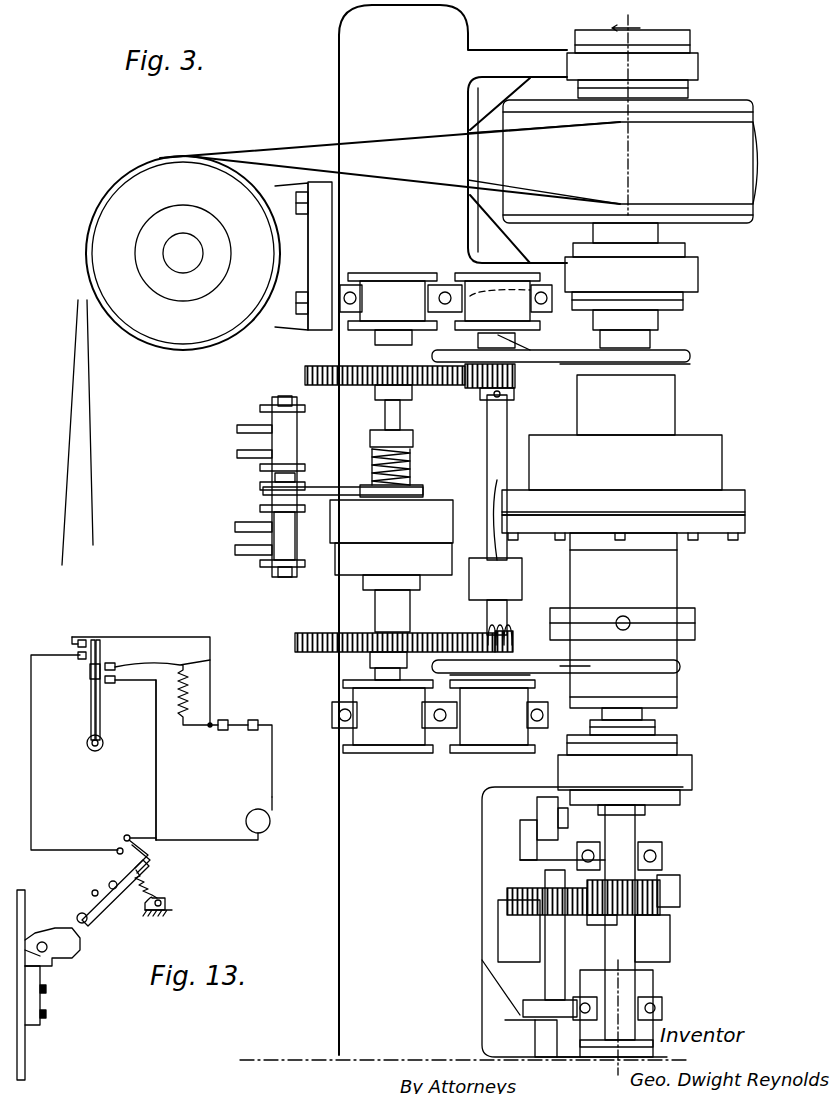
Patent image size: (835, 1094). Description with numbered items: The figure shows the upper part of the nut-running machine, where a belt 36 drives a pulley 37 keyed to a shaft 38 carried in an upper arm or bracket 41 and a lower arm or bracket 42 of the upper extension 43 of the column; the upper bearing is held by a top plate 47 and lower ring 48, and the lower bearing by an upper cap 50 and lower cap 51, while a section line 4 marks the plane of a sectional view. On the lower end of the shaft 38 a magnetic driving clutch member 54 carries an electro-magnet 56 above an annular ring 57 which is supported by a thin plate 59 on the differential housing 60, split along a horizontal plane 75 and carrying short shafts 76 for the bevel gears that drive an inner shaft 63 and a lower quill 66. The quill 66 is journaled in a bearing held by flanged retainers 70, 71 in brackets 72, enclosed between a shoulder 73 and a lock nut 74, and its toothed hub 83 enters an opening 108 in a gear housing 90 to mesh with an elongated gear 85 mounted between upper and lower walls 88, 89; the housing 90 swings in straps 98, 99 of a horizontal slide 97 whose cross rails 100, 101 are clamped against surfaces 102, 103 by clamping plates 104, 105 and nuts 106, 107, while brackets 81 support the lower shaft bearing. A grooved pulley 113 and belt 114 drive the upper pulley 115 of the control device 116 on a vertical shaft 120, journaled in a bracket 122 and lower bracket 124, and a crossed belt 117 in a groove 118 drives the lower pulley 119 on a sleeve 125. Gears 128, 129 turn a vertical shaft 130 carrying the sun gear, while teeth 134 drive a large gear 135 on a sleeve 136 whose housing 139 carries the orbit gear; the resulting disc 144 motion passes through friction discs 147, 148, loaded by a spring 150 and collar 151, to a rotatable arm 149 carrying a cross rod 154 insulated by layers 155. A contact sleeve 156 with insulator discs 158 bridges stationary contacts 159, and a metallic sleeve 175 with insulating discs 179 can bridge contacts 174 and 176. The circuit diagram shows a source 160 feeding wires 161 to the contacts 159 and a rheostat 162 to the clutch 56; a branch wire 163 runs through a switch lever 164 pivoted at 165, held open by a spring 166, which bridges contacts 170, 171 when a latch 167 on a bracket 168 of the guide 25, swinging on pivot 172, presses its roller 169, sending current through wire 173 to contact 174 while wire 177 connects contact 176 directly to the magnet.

In FIG. 3, the upper extension of the upright 43 is at (336, 1052).
In FIG. 3, the section line 4 is at (623, 548).
In FIG. 3, the top plate 47 is at (672, 42).
In FIG. 3, the upper arm or bracket 41 is at (690, 60).
In FIG. 3, the lower ring 48 is at (684, 92).
In FIG. 3, the pulley 37 is at (745, 112).
In FIG. 3, the belt 36 is at (285, 146).
In FIG. 3, the upper cap 50 is at (685, 250).
In FIG. 3, the lower arm or bracket 42 is at (698, 275).
In FIG. 3, the lower cap 51 is at (686, 310).
In FIG. 3, the shaft 38 is at (652, 335).
In FIG. 3, the bracket 122 is at (470, 283).
In FIG. 3, the upper grooved pulley 115 is at (550, 350).
In FIG. 3, the belt 114 is at (690, 357).
In FIG. 3, the grooved pulley 113 is at (686, 365).
In FIG. 3, the gear 129 is at (316, 366).
In FIG. 3, the gear 128 is at (515, 378).
In FIG. 3, the vertical shaft 130 is at (400, 410).
In FIG. 3, the vertical shaft 120 is at (507, 418).
In FIG. 3, the metallic sleeve 175 is at (286, 438).
In FIG. 3, the insulating discs 179 is at (266, 405).
In FIG. 3, the fixed contact 176 is at (237, 429).
In FIG. 13, the fixed contact 176 is at (85, 640).
In FIG. 3, the contact 174 is at (237, 455).
In FIG. 13, the contact 174 is at (80, 660).
In FIG. 3, the layers of insulation 155 is at (262, 484).
In FIG. 3, the cross rod 154 is at (296, 479).
In FIG. 3, the end insulator discs 158 is at (260, 507).
In FIG. 3, the stationary contacts 159 is at (235, 548).
In FIG. 13, the stationary contacts 159 is at (116, 667).
In FIG. 3, the contact sleeve 156 is at (290, 546).
In FIG. 3, the nut or collar 151 is at (413, 440).
In FIG. 3, the spring 150 is at (372, 470).
In FIG. 3, the outer friction disc 148 is at (412, 478).
In FIG. 3, the friction disc 147 is at (425, 490).
In FIG. 3, the rotatable arm 149 is at (312, 495).
In FIG. 13, the rotatable arm 149 is at (98, 712).
In FIG. 3, the disc 144 is at (440, 500).
In FIG. 3, the housing 139 is at (393, 566).
In FIG. 3, the control device 116 is at (331, 572).
In FIG. 3, the sleeve 136 is at (386, 608).
In FIG. 3, the large gear 135 is at (304, 633).
In FIG. 3, the gear teeth 134 is at (515, 638).
In FIG. 3, the sleeve 125 is at (507, 612).
In FIG. 3, the magnetic driving clutch member 54 is at (625, 432).
In FIG. 3, the annular plate or ring 57 is at (740, 525).
In FIG. 3, the annular disc or plate 59 is at (712, 540).
In FIG. 3, the differential housing 60 is at (676, 583).
In FIG. 3, the horizontal split plane 75 is at (692, 626).
In FIG. 3, the short shafts 76 is at (624, 616).
In FIG. 3, the crossed belt 117 is at (556, 659).
In FIG. 3, the groove 118 is at (584, 670).
In FIG. 3, the grooved pulley 119 is at (522, 676).
In FIG. 3, the lower bracket 124 is at (440, 716).
In FIG. 3, the lock nut 74 is at (656, 729).
In FIG. 3, the upper flanged retainer 70 is at (678, 742).
In FIG. 3, the arms or brackets 72 is at (692, 775).
In FIG. 3, the lower flanged retainer 71 is at (680, 803).
In FIG. 3, the shoulder 73 is at (645, 812).
In FIG. 3, the supporting surface 102 is at (482, 833).
In FIG. 3, the clamping plate 104 is at (550, 797).
In FIG. 3, the tightening nut 106 is at (568, 812).
In FIG. 3, the upper cross rail 100 is at (526, 822).
In FIG. 3, the lower quill 66 is at (620, 922).
In FIG. 3, the upper cap or strap 98 is at (662, 850).
In FIG. 3, the upper wall 88 is at (680, 880).
In FIG. 3, the elongated gear 85 is at (507, 898).
In FIG. 3, the enlarged hub 83 is at (660, 912).
In FIG. 3, the lower wall 89 is at (498, 922).
In FIG. 3, the horizontal slide or frame 97 is at (539, 948).
In FIG. 3, the opening 108 is at (598, 918).
In FIG. 3, the gear housing 90 is at (670, 952).
In FIG. 3, the shaft 63 is at (622, 980).
In FIG. 3, the lower cap or strap 99 is at (652, 1022).
In FIG. 3, the lower cross rail 101 is at (525, 1012).
In FIG. 3, the supporting surface 103 is at (482, 1020).
In FIG. 3, the clamping plate 105 is at (536, 1044).
In FIG. 3, the brackets or arms 81 is at (630, 1049).
In FIG. 3, the tightening nut 107 is at (562, 1058).
In FIG. 13, the wire 173 is at (32, 785).
In FIG. 13, the wire 177 is at (208, 637).
In FIG. 13, the rheostat 162 is at (192, 672).
In FIG. 13, the electro-magnet 56 is at (252, 720).
In FIG. 13, the generator or source of current 160 is at (270, 816).
In FIG. 13, the wires 161 is at (157, 779).
In FIG. 13, the contact 170 is at (128, 835).
In FIG. 13, the contact 171 is at (117, 850).
In FIG. 13, the branch wire 163 is at (149, 856).
In FIG. 13, the switch lever 164 is at (98, 906).
In FIG. 13, the pivot 165 is at (110, 883).
In FIG. 13, the anti-friction roller 169 is at (86, 924).
In FIG. 13, the spring 166 is at (157, 888).
In FIG. 13, the guide 25 is at (25, 890).
In FIG. 13, the pivot 172 is at (42, 941).
In FIG. 13, the latch 167 is at (72, 958).
In FIG. 13, the bracket 168 is at (34, 1000).